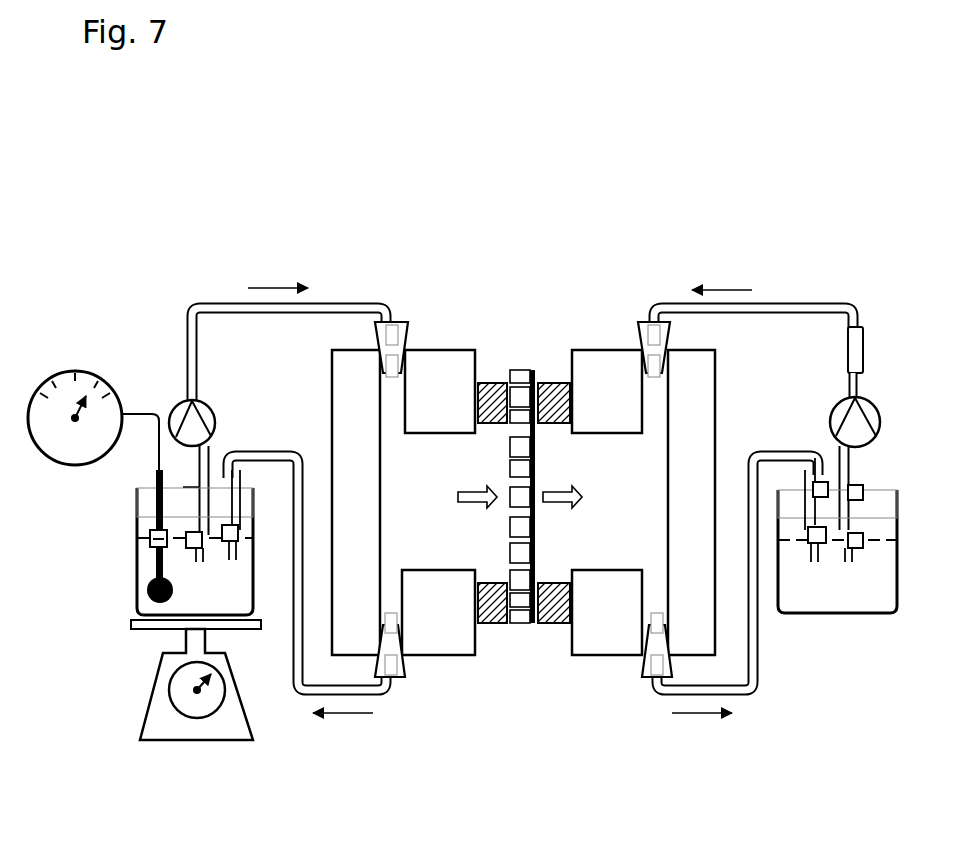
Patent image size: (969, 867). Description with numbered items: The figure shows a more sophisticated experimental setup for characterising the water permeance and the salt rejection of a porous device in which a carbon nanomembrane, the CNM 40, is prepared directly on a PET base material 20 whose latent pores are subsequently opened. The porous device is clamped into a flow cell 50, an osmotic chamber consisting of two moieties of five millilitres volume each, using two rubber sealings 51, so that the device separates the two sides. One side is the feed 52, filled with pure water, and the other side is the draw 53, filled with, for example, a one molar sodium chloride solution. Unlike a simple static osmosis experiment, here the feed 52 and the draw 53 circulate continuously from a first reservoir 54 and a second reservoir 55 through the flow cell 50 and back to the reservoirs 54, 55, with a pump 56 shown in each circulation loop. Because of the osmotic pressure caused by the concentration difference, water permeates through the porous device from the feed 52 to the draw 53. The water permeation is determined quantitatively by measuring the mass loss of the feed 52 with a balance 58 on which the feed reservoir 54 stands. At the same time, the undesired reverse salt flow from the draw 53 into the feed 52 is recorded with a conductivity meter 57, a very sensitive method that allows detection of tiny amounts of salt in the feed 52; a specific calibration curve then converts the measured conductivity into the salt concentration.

The PET base material 20 is at (517, 642).
The CNM 40 is at (540, 640).
The flow cell 50 is at (523, 502).
The rubber sealings 51 is at (490, 640).
The feed 52 is at (451, 497).
The draw 53 is at (588, 497).
The reservoir 54 is at (128, 588).
The reservoir 55 is at (855, 625).
The pump 56 is at (160, 393).
The conductivity meter 57 is at (85, 478).
The balance 58 is at (138, 700).